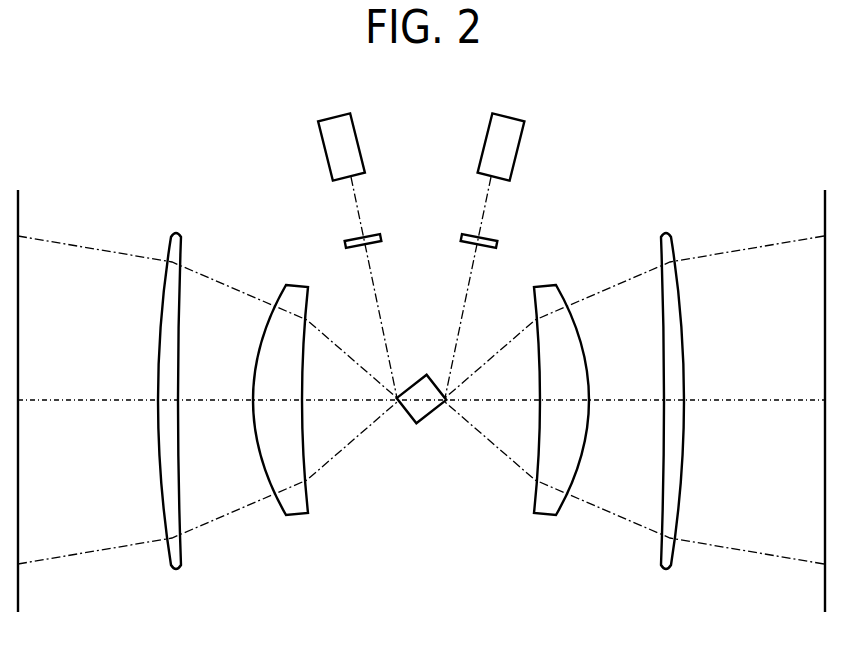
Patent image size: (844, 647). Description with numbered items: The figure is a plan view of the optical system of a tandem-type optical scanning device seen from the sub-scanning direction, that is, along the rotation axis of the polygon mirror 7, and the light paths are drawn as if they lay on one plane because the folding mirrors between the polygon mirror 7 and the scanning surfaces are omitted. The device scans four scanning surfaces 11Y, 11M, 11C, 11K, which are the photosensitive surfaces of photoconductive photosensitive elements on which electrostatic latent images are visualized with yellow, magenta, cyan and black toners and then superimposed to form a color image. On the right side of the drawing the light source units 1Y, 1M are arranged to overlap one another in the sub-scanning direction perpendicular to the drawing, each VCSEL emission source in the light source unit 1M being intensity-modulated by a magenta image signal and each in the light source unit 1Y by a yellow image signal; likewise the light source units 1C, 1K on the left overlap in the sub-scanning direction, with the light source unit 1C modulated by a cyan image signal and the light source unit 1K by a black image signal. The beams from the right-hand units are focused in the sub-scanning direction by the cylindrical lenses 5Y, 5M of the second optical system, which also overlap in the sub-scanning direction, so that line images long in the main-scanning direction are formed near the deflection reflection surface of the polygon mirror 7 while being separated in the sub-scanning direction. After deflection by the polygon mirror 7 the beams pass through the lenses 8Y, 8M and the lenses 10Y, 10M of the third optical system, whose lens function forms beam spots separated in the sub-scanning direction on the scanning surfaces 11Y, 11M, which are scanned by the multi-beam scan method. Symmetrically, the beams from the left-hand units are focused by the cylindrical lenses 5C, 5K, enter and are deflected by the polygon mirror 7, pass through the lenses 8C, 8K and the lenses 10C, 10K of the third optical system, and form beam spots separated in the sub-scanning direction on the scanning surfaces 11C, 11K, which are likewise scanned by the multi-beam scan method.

The light source unit 1C is at (303, 146).
The light source unit 1K is at (328, 158).
The light source unit 1Y is at (540, 146).
The light source unit 1M is at (516, 158).
The cylindrical lens 5C is at (320, 240).
The cylindrical lens 5K is at (346, 244).
The cylindrical lens 5Y is at (521, 240).
The cylindrical lens 5M is at (496, 244).
The polygon mirror 7 is at (427, 421).
The lens 8C is at (247, 400).
The lens 8K is at (270, 338).
The lens 8Y is at (595, 400).
The lens 8M is at (572, 338).
The lens 10C is at (118, 401).
The lens 10K is at (163, 313).
The lens 10Y is at (725, 401).
The lens 10M is at (679, 313).
The scanning surface 11C is at (74, 398).
The scanning surface 11K is at (20, 204).
The scanning surface 11Y is at (769, 398).
The scanning surface 11M is at (823, 204).